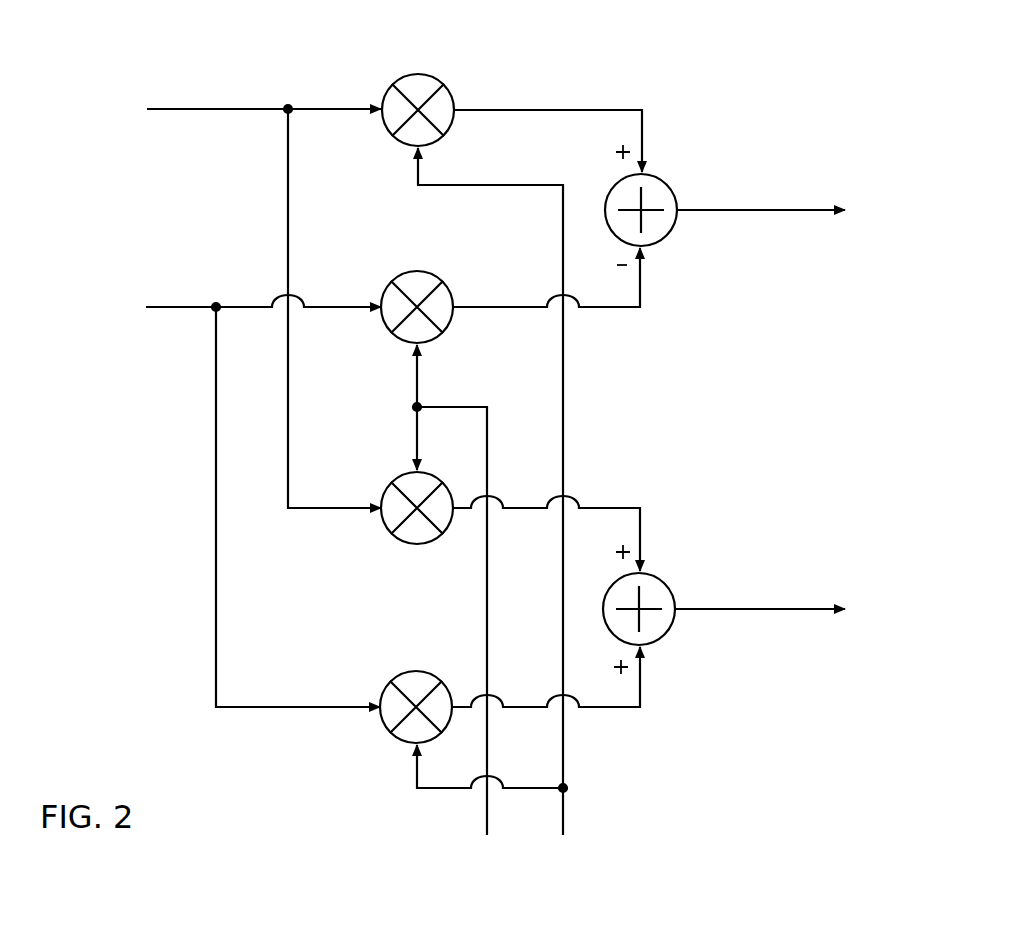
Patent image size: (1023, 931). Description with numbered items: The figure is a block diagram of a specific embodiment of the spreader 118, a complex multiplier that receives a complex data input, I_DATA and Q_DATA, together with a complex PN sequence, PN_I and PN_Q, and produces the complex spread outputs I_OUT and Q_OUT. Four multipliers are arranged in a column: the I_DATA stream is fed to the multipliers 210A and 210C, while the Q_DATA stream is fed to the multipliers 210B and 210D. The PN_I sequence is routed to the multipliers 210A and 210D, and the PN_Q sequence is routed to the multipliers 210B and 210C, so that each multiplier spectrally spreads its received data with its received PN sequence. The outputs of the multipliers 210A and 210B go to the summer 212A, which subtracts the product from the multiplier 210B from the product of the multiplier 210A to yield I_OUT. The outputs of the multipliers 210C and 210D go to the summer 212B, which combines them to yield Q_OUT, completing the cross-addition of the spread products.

The spreader 118 is at (919, 89).
The multiplier 210A is at (418, 76).
The multiplier 210B is at (417, 273).
The multiplier 210C is at (406, 474).
The multiplier 210D is at (417, 672).
The summer 212A is at (662, 183).
The summer 212B is at (665, 585).